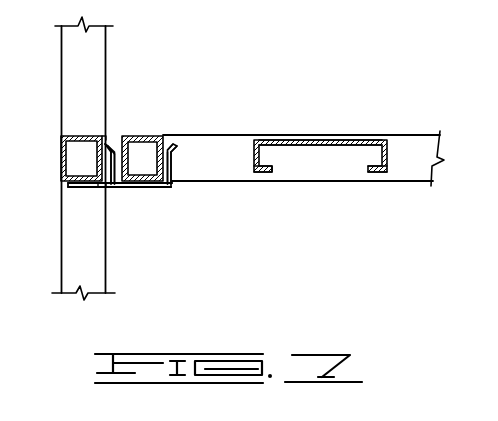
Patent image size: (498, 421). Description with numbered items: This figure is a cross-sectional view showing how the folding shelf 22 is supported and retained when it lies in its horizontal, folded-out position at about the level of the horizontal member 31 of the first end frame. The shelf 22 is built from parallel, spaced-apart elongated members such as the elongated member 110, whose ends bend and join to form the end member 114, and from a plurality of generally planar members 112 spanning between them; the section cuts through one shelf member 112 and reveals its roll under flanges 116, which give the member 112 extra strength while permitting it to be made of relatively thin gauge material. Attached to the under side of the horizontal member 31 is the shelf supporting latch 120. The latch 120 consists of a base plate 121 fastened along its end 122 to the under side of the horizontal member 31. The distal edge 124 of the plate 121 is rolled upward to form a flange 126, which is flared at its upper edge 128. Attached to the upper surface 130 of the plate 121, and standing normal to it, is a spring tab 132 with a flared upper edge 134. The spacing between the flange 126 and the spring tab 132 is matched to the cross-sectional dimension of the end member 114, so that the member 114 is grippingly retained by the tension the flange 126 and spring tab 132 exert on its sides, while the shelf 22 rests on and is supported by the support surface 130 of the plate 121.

The horizontal member 31 is at (75, 130).
The shelf 22 is at (228, 123).
The elongated member 110 is at (293, 139).
The planar member 112 is at (322, 140).
The roll under flange 116 is at (256, 158).
The end member 114 is at (153, 138).
The shelf supporting latch 120 is at (140, 198).
The base plate 121 is at (110, 188).
The end 122 is at (80, 186).
The distal edge 124 is at (165, 189).
The flange 126 is at (173, 175).
The upper edge 128 is at (176, 155).
The upper surface 130 is at (100, 187).
The spring tab 132 is at (103, 138).
The flared upper edge 134 is at (110, 152).